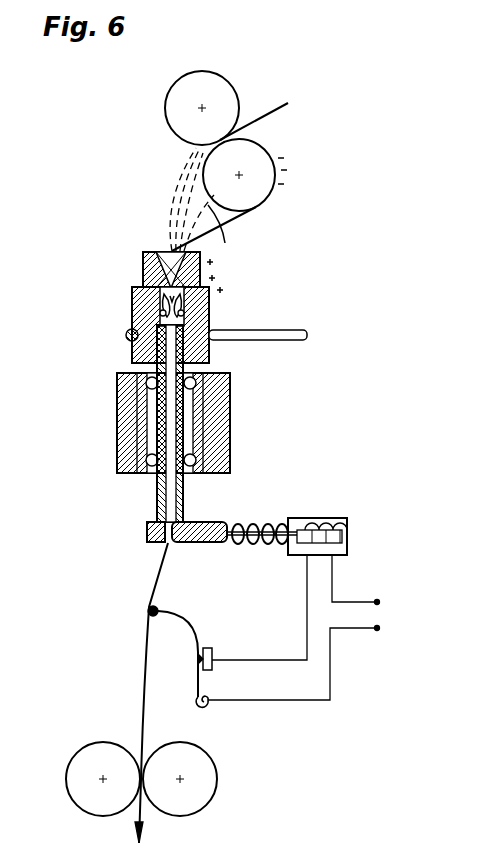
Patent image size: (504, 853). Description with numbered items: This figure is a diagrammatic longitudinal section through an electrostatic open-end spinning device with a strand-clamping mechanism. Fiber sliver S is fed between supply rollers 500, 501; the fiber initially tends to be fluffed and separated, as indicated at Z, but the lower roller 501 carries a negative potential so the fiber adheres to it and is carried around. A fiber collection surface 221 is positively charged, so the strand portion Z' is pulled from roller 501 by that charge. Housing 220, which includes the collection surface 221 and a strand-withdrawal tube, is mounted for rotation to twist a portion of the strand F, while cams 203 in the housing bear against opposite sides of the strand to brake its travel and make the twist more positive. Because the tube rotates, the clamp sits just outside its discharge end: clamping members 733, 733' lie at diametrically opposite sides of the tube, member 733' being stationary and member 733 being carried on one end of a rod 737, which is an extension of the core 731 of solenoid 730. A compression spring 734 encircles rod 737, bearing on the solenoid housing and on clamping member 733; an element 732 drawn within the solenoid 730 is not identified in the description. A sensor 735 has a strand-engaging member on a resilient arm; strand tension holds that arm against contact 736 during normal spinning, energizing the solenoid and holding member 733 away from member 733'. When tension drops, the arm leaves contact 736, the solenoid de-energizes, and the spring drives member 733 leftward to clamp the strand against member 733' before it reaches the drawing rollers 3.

The supply roller 500 is at (236, 93).
The lower supply roller 501 is at (276, 196).
The fiber sliver S is at (284, 108).
The fluffed fiber Z is at (170, 199).
The strand portion Z' is at (225, 228).
The fiber collection surface 221 is at (163, 256).
The cams 203 is at (163, 312).
The housing 220 is at (157, 314).
The strand F is at (184, 318).
The stationary clamping member 733' is at (115, 556).
The movable clamping member 733 is at (213, 554).
The compression spring 734 is at (267, 527).
The rod 737 is at (243, 530).
The solenoid 730 is at (348, 550).
The core 731 is at (345, 528).
The solenoid coil 732 is at (322, 519).
The sensor 735 is at (160, 613).
The contact 736 is at (212, 654).
The drawing rollers 3 is at (205, 782).